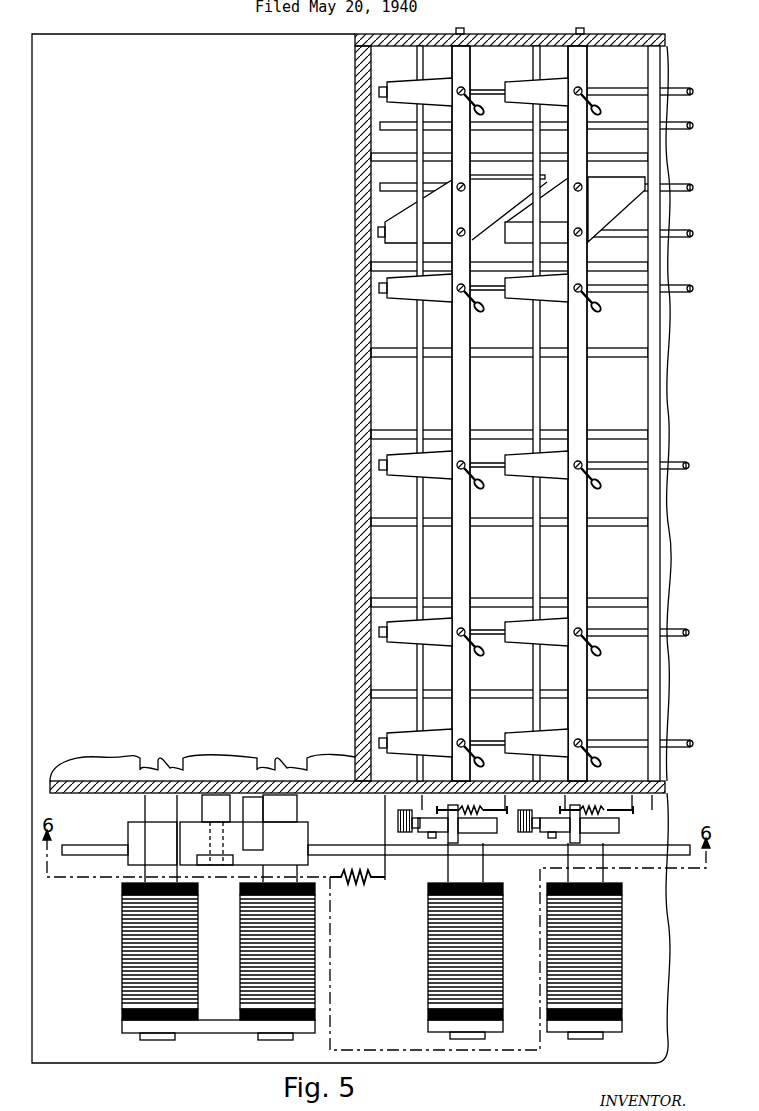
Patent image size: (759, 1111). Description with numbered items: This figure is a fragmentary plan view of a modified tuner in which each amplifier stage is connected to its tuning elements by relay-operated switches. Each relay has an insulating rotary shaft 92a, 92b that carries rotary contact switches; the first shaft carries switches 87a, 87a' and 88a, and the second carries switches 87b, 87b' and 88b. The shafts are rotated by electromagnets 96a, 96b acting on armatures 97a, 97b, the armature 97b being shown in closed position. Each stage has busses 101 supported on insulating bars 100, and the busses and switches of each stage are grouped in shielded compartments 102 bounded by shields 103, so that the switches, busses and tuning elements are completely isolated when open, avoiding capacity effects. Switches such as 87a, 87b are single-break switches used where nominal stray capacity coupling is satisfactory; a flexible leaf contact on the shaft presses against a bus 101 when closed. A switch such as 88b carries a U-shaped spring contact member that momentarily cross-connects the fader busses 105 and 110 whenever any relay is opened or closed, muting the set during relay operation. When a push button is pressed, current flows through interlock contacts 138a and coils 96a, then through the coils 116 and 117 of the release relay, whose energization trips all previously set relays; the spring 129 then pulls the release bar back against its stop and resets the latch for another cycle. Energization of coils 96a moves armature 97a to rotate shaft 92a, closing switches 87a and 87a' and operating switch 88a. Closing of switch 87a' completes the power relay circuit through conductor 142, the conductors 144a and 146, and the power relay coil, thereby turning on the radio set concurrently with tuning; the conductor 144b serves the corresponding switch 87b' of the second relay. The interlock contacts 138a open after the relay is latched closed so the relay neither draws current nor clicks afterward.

The insulating rotary shaft 92a is at (463, 57).
The insulating rotary shaft 92b is at (575, 65).
The contact switch 87a' is at (415, 80).
The contact switch 87b' is at (533, 80).
The contact switch 87a is at (414, 515).
The contact switch 87b is at (536, 515).
The conductor 144a is at (475, 107).
The conductor 144b is at (602, 118).
The conductor 142 is at (597, 93).
The conductor 146 is at (625, 122).
The shield 103 is at (662, 157).
The bus 105 is at (670, 187).
The bus 110 is at (672, 235).
The contact switch 88a is at (473, 210).
The contact switch 88b is at (616, 209).
The shielded compartment 102 is at (383, 333).
The insulating bar 100 is at (417, 397).
The bus 101 is at (673, 465).
The interlock contacts 138a is at (396, 822).
The armature 97a is at (497, 825).
The armature 97b is at (615, 828).
The spring 129 is at (350, 878).
The electromagnet 116 is at (122, 990).
The electromagnet 117 is at (317, 1003).
The electromagnet 96a is at (428, 950).
The electromagnet 96b is at (622, 958).